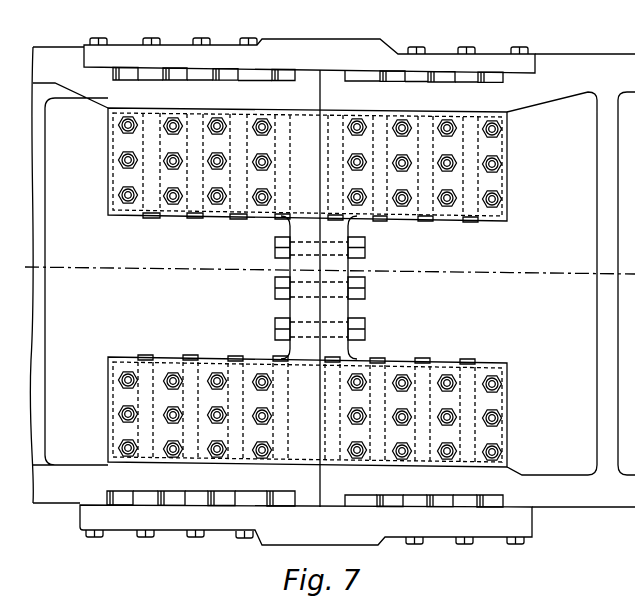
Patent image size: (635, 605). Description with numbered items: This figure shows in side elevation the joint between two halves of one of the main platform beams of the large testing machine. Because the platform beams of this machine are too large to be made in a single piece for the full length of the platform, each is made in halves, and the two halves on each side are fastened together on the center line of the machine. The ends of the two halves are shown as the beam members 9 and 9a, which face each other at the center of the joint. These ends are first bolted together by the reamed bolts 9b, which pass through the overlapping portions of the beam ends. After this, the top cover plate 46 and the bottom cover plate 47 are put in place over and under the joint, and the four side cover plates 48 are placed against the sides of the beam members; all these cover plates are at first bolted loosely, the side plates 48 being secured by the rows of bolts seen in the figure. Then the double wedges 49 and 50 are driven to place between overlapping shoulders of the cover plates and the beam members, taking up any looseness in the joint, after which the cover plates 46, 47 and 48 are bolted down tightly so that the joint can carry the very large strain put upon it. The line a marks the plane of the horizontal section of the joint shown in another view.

The top cover plate 46 is at (309, 55).
The bottom cover plate 47 is at (357, 526).
The side cover plate 48 is at (505, 183).
The double wedge 49 is at (126, 80).
The double wedge 50 is at (114, 72).
The platform beam 9 is at (551, 280).
The platform beam 9a is at (160, 275).
The reamed bolt 9b is at (332, 297).
The section line a is at (330, 266).